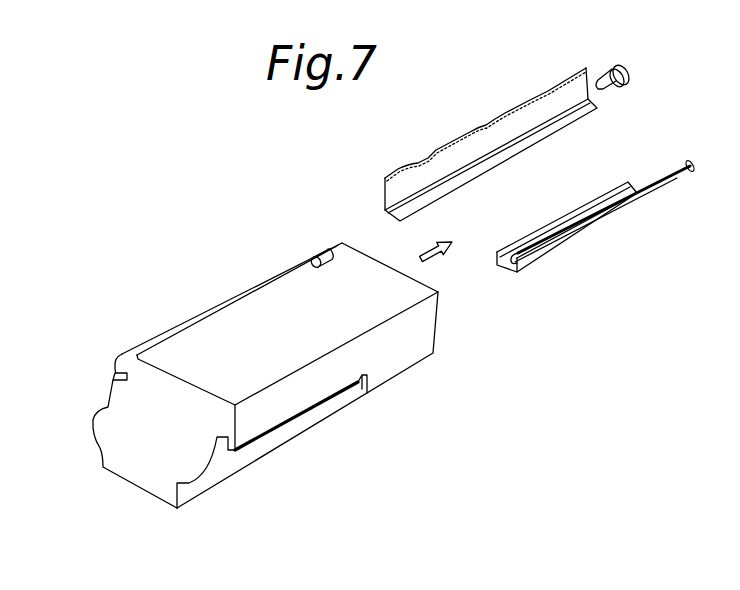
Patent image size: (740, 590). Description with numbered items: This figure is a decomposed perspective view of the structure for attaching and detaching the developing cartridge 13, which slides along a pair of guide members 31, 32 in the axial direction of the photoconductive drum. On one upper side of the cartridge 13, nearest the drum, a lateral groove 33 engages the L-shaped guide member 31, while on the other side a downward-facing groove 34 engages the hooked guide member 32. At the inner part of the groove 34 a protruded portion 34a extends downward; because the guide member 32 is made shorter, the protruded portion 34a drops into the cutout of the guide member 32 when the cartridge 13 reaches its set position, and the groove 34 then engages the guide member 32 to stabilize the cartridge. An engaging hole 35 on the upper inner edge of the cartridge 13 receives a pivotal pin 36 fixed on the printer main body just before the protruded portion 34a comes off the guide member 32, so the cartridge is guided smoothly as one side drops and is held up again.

The developing cartridge 13 is at (153, 494).
The L-shaped guide member 31 is at (475, 134).
The hooked guide member 32 is at (600, 218).
The lateral groove 33 is at (115, 372).
The groove 34 is at (258, 443).
The protruded portion 34a is at (403, 372).
The engaging hole 35 is at (336, 265).
The pivotal pin 36 is at (608, 65).